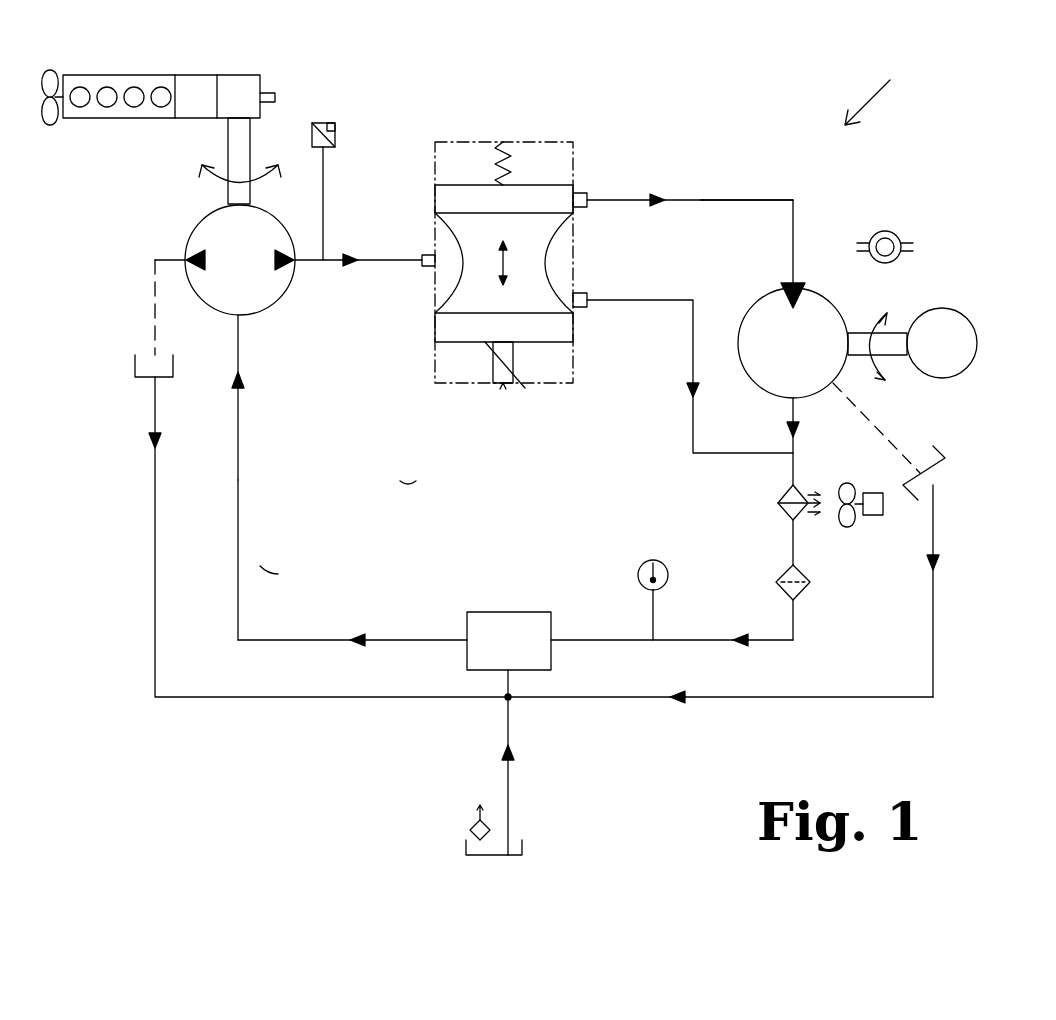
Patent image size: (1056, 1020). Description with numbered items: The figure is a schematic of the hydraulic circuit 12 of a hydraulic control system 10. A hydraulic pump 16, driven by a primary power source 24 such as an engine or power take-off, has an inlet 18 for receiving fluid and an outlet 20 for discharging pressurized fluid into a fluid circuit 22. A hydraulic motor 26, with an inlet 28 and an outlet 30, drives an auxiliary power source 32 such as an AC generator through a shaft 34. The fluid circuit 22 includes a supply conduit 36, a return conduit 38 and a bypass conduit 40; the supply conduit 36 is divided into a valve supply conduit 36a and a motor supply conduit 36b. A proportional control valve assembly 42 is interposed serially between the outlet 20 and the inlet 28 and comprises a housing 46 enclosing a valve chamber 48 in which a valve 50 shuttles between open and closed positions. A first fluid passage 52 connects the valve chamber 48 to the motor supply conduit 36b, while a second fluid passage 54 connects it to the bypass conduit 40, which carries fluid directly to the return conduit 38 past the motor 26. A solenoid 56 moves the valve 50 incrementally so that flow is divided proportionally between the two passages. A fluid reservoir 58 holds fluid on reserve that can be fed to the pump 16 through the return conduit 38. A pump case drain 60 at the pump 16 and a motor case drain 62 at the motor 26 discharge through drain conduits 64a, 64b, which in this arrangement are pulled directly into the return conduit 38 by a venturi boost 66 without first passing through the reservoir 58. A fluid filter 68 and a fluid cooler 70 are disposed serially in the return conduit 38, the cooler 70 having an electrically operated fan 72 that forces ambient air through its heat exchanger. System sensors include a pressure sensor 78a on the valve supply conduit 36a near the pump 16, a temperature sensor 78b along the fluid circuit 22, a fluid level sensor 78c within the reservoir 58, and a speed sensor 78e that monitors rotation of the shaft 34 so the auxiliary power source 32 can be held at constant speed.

The hydraulic control system 10 is at (881, 90).
The hydraulic circuit 12 is at (416, 481).
The hydraulic pump 16 is at (192, 218).
The inlet 18 is at (242, 318).
The outlet 20 is at (298, 265).
The fluid circuit 22 is at (272, 565).
The primary power source 24 is at (260, 78).
The hydraulic motor 26 is at (740, 302).
The inlet 28 is at (800, 286).
The outlet 30 is at (790, 400).
The auxiliary power source 32 is at (963, 313).
The shaft 34 is at (890, 375).
The supply conduit 36 is at (365, 257).
The valve supply conduit 36a is at (397, 269).
The motor supply conduit 36b is at (755, 202).
The return conduit 38 is at (240, 467).
The bypass conduit 40 is at (690, 412).
The proportional control valve assembly 42 is at (535, 132).
The housing 46 is at (464, 145).
The valve chamber 48 is at (560, 261).
The valve 50 is at (490, 307).
The first fluid passage 52 is at (585, 193).
The second fluid passage 54 is at (585, 311).
The solenoid 56 is at (503, 384).
The fluid reservoir 58 is at (508, 843).
The pump case drain 60 is at (135, 369).
The motor case drain 62 is at (940, 465).
The drain conduit 64a is at (148, 566).
The drain conduit 64b is at (933, 598).
The venturi boost 66 is at (525, 610).
The fluid filter 68 is at (803, 593).
The fluid cooler 70 is at (778, 491).
The fan 72 is at (873, 515).
The pressure sensor 78a is at (323, 123).
The temperature sensor 78b is at (635, 575).
The fluid level sensor 78c is at (471, 820).
The speed sensor 78e is at (889, 227).